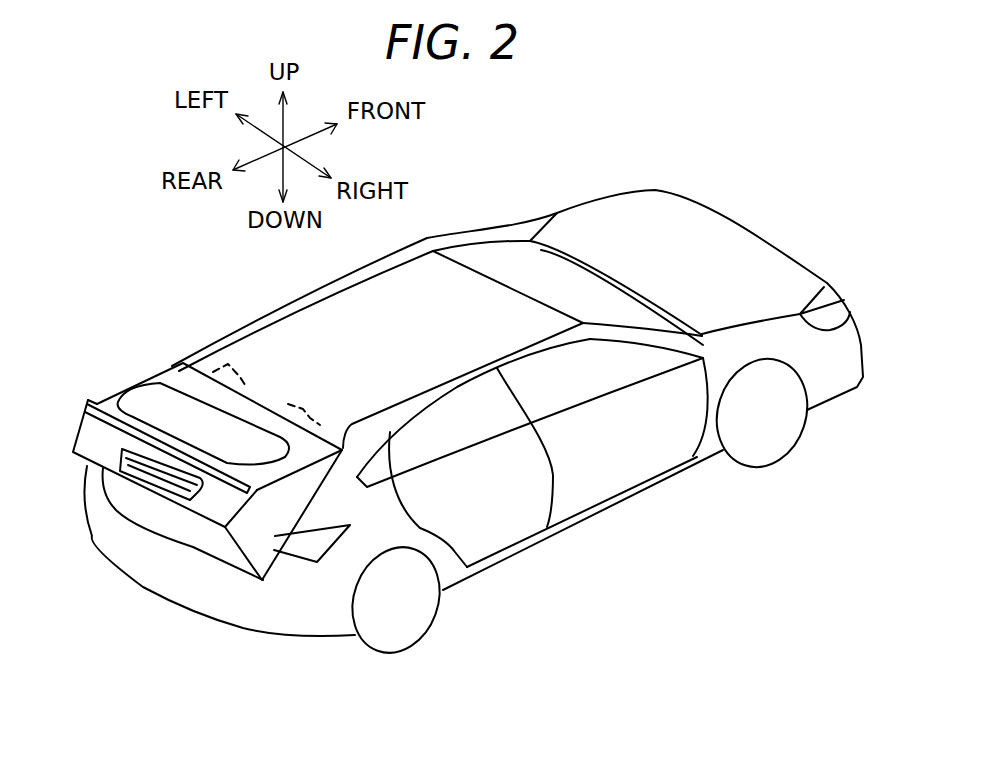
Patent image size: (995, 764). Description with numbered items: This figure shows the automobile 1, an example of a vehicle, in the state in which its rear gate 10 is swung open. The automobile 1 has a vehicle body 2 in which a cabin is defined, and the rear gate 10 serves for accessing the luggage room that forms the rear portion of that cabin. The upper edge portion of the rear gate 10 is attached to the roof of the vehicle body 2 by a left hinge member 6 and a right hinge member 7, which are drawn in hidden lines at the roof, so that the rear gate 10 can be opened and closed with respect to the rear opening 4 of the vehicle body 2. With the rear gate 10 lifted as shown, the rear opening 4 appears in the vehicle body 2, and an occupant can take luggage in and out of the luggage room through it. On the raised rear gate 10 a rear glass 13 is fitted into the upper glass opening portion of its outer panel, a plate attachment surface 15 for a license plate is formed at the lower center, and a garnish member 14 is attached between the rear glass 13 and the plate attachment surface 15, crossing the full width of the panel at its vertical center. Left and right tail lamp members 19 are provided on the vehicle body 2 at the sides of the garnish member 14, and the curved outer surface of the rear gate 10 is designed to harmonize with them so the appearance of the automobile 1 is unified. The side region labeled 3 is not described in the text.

The automobile 1 is at (170, 213).
The vehicle body 2 is at (607, 215).
The side door 3 is at (557, 380).
The rear opening 4 is at (218, 561).
The left hinge member 6 is at (240, 373).
The right hinge member 7 is at (317, 423).
The rear gate 10 is at (110, 393).
The rear glass 13 is at (173, 403).
The garnish member 14 is at (87, 403).
The plate attachment surface 15 is at (165, 485).
The tail lamp members 19 is at (303, 545).